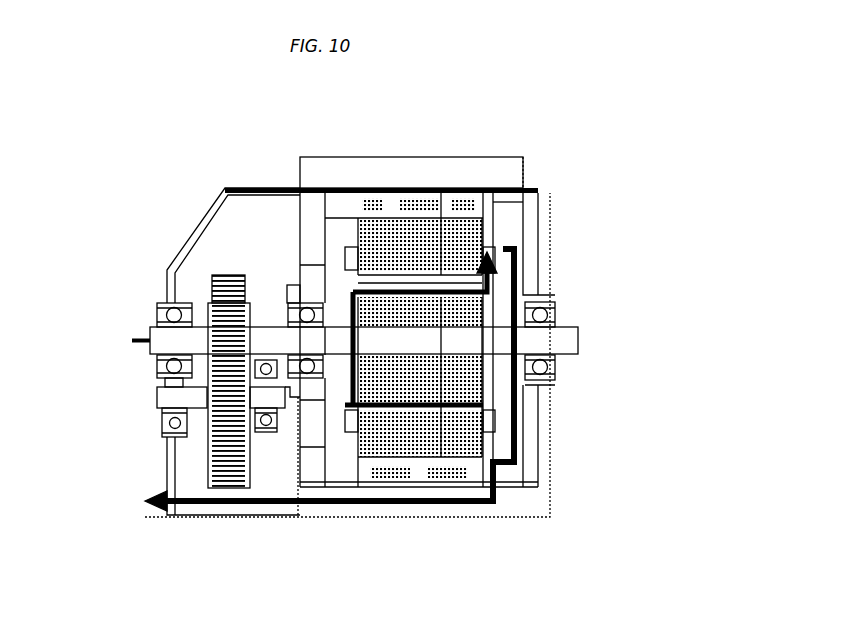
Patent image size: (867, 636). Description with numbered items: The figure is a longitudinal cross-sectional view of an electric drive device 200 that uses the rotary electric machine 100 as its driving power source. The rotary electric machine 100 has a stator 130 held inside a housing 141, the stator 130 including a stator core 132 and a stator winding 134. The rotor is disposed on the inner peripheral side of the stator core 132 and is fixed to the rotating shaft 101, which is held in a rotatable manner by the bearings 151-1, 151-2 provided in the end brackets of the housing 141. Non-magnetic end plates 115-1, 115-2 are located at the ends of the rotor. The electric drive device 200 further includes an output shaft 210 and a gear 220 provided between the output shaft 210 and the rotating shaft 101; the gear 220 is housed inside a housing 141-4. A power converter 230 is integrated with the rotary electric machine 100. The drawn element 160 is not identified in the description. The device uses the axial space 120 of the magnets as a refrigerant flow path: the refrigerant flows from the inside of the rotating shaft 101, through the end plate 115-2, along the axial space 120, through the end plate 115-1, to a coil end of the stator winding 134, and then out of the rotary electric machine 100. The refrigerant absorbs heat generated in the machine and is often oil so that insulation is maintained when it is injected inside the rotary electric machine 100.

The rotary electric machine 100 is at (537, 485).
The rotating shaft 101 is at (580, 344).
The end plate 115-1 is at (493, 390).
The end plate 115-2 is at (336, 395).
The axial space 120 is at (452, 298).
The stator 130 is at (372, 222).
The stator core 132 is at (452, 237).
The stator winding 134 is at (352, 262).
The housing 141 is at (537, 222).
The housing 141-4 is at (187, 243).
The bearing 151-1 is at (540, 316).
The bearing 151-2 is at (306, 315).
The air gap 160 is at (403, 292).
The electric drive device 200 is at (570, 148).
The output shaft 210 is at (157, 397).
The gear 220 is at (225, 275).
The power converter 230 is at (503, 157).